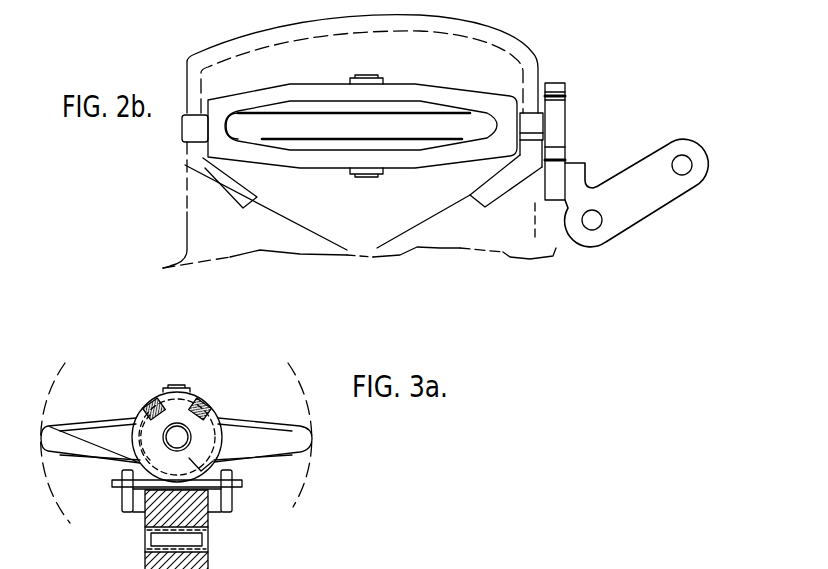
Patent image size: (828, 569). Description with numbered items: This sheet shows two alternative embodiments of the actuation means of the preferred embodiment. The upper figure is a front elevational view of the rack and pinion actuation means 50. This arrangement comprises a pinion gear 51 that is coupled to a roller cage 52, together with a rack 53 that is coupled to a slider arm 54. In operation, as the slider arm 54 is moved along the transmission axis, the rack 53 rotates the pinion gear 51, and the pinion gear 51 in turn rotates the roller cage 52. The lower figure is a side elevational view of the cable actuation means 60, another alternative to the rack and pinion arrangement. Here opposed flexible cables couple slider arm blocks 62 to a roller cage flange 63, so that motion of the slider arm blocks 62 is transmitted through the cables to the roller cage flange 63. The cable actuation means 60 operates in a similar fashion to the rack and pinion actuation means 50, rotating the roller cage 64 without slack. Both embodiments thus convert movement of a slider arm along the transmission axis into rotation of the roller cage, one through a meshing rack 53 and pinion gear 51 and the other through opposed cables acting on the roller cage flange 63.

In FIG. 2b, the rack and pinion actuation means 50 is at (598, 105).
In FIG. 2b, the pinion gear 51 is at (556, 83).
In FIG. 2b, the roller cage 52 is at (452, 97).
In FIG. 2b, the rack 53 is at (537, 202).
In FIG. 2b, the slider arm 54 is at (663, 143).
In FIG. 3a, the cable actuation means 60 is at (257, 408).
In FIG. 3a, the slider arm blocks 62 is at (133, 500).
In FIG. 3a, the roller cage flange 63 is at (228, 418).
In FIG. 3a, the roller cage 64 is at (308, 529).